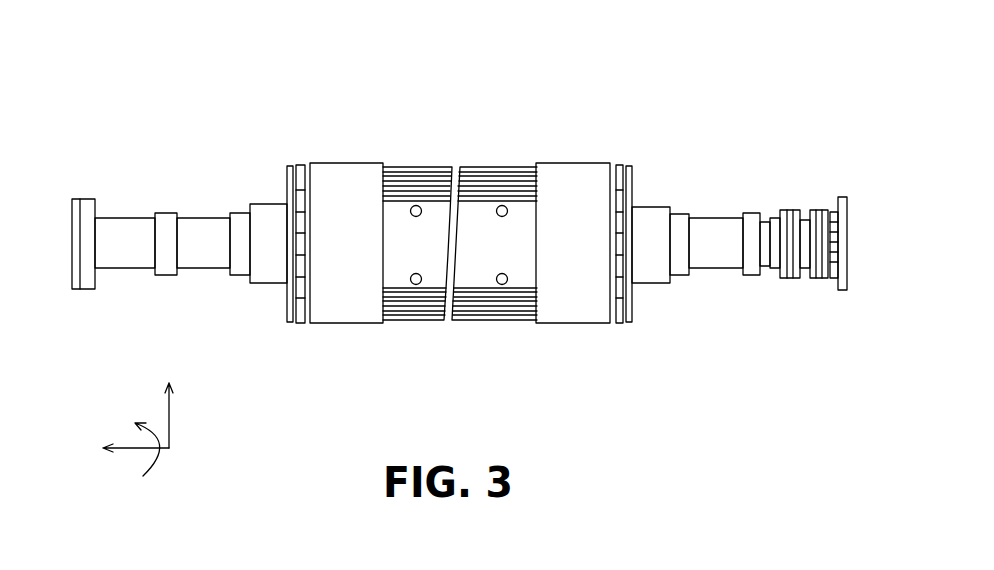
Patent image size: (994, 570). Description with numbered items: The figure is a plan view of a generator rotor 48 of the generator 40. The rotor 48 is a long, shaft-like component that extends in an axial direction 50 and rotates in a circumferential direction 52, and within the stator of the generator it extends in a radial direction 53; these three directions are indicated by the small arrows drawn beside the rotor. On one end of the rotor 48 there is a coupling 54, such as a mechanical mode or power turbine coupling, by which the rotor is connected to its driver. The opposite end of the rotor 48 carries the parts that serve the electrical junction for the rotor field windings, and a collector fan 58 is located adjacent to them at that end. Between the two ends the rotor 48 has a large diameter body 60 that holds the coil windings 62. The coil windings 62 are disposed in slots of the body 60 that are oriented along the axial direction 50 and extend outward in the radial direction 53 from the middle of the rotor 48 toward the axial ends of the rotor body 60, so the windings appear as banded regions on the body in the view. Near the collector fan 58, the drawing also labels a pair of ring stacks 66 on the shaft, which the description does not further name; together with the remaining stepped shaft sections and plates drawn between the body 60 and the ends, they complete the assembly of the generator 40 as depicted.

The generator 40 is at (562, 90).
The generator rotor 48 is at (122, 268).
The axial direction 50 is at (130, 450).
The circumferential direction 52 is at (158, 457).
The radial direction 53 is at (170, 415).
The coupling 54 is at (90, 200).
The collector fan 58 is at (843, 293).
The rotor body 60 is at (421, 247).
The coil windings 62 is at (400, 187).
The bearings 66 is at (825, 210).